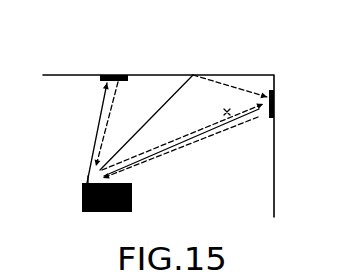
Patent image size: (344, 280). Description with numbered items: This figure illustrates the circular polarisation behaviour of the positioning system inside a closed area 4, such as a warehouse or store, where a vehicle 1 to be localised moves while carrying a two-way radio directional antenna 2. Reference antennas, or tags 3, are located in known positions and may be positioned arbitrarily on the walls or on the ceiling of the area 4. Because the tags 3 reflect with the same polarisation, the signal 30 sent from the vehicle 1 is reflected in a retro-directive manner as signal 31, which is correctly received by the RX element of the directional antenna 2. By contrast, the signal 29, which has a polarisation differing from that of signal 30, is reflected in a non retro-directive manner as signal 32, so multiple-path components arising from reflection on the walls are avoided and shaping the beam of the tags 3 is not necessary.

The vehicle 1 is at (132, 191).
The directional antenna 2 is at (88, 181).
The reference antenna 3 is at (100, 81).
The area 4 is at (76, 75).
The signal 29 is at (229, 85).
The signal 30 is at (94, 119).
The signal 31 is at (112, 108).
The signal 32 is at (212, 121).